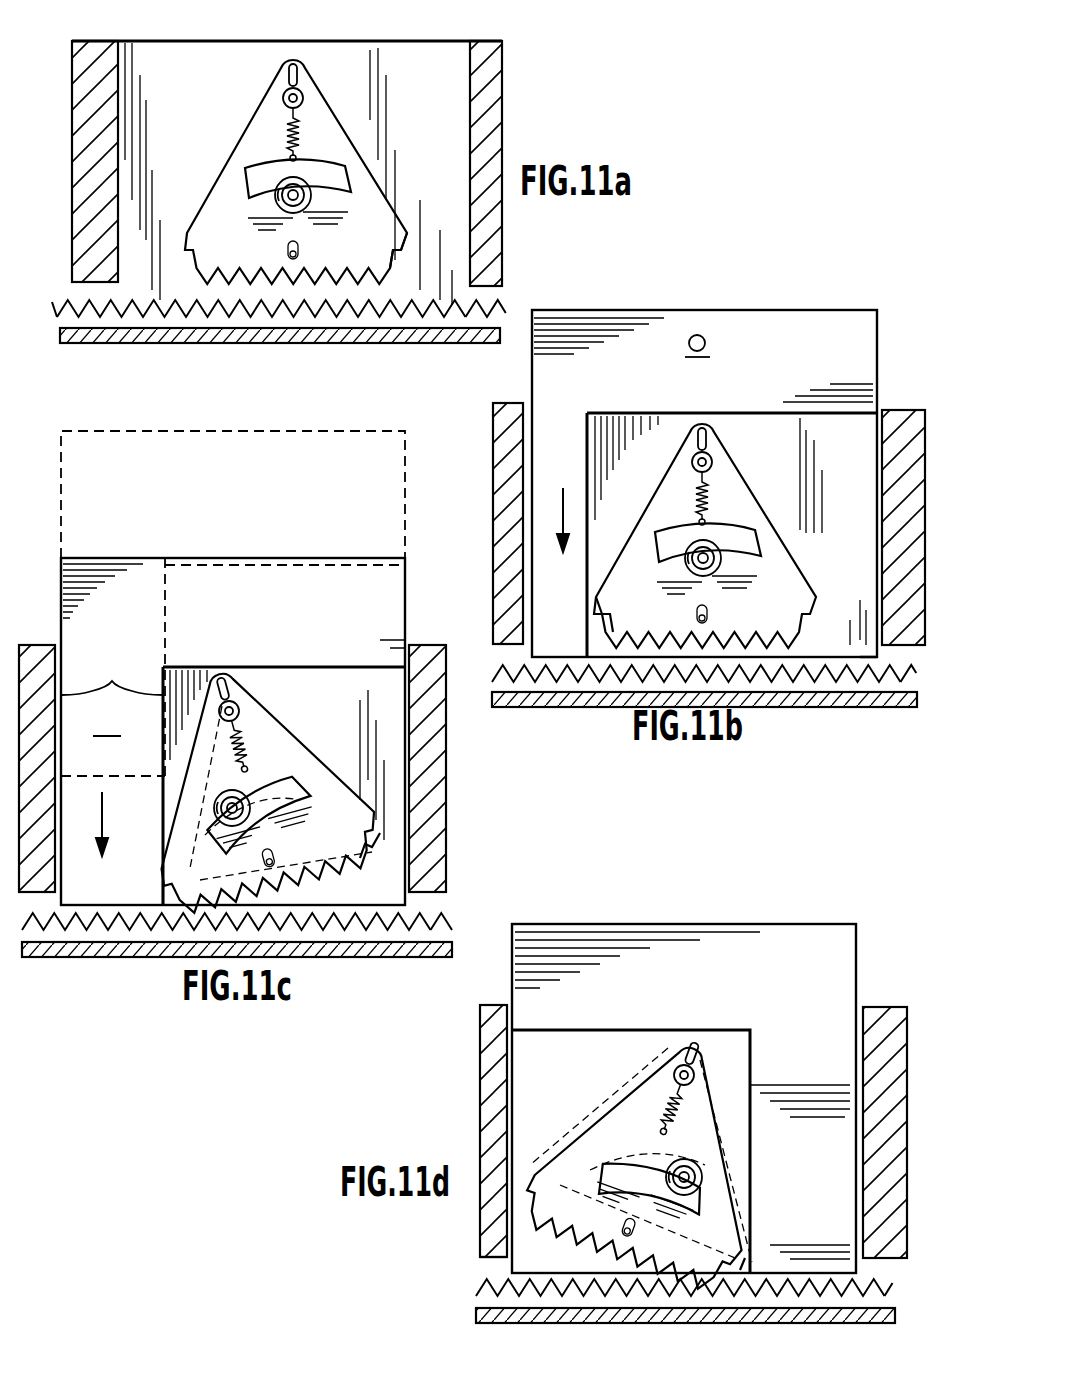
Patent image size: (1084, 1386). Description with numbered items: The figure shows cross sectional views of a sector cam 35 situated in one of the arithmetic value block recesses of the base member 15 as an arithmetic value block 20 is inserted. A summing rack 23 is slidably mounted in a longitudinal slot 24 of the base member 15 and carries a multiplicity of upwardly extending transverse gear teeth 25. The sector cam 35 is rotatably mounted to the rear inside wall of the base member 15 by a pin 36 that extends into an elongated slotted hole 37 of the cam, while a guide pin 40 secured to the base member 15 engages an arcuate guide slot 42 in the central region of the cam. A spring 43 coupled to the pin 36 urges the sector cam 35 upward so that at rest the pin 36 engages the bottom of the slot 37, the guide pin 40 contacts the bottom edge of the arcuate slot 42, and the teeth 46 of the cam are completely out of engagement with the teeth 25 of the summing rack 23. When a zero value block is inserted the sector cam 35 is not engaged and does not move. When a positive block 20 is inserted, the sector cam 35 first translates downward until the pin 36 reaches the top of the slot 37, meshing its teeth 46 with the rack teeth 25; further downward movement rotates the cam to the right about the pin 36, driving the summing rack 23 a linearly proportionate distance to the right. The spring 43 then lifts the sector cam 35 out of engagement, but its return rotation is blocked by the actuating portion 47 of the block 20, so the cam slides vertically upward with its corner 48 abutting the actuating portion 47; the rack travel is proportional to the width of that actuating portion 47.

In FIG. 11a, the base member 15 is at (76, 42).
In FIG. 11b, the base member 15 is at (504, 406).
In FIG. 11c, the base member 15 is at (42, 645).
In FIG. 11d, the base member 15 is at (494, 1008).
In FIG. 11b, the arithmetic value block 20 is at (704, 483).
In FIG. 11c, the arithmetic value block 20 is at (125, 558).
In FIG. 11d, the arithmetic value block 20 is at (684, 1098).
In FIG. 11a, the summing rack 23 is at (90, 326).
In FIG. 11b, the summing rack 23 is at (818, 690).
In FIG. 11c, the summing rack 23 is at (360, 944).
In FIG. 11d, the summing rack 23 is at (505, 1310).
In FIG. 11a, the longitudinal slot 24 is at (80, 292).
In FIG. 11b, the longitudinal slot 24 is at (885, 652).
In FIG. 11c, the longitudinal slot 24 is at (430, 895).
In FIG. 11d, the longitudinal slot 24 is at (490, 1257).
In FIG. 11a, the transverse gear teeth 25 is at (172, 303).
In FIG. 11b, the transverse gear teeth 25 is at (798, 668).
In FIG. 11c, the transverse gear teeth 25 is at (92, 912).
In FIG. 11d, the transverse gear teeth 25 is at (482, 1282).
In FIG. 11a, the sector cam 35 is at (237, 150).
In FIG. 11b, the sector cam 35 is at (722, 468).
In FIG. 11c, the sector cam 35 is at (278, 745).
In FIG. 11d, the sector cam 35 is at (640, 1108).
In FIG. 11a, the pin 36 is at (303, 96).
In FIG. 11b, the pin 36 is at (712, 460).
In FIG. 11c, the pin 36 is at (240, 705).
In FIG. 11d, the pin 36 is at (690, 1068).
In FIG. 11a, the elongated slotted hole 37 is at (297, 64).
In FIG. 11b, the elongated slotted hole 37 is at (705, 428).
In FIG. 11c, the elongated slotted hole 37 is at (236, 700).
In FIG. 11d, the elongated slotted hole 37 is at (698, 1062).
In FIG. 11a, the guide pin 40 is at (292, 196).
In FIG. 11b, the guide pin 40 is at (700, 558).
In FIG. 11c, the guide pin 40 is at (230, 808).
In FIG. 11d, the guide pin 40 is at (702, 1178).
In FIG. 11a, the arcuate guide slot 42 is at (252, 178).
In FIG. 11b, the arcuate guide slot 42 is at (740, 528).
In FIG. 11c, the arcuate guide slot 42 is at (298, 808).
In FIG. 11d, the arcuate guide slot 42 is at (608, 1172).
In FIG. 11a, the spring 43 is at (300, 128).
In FIG. 11b, the spring 43 is at (712, 500).
In FIG. 11c, the spring 43 is at (255, 735).
In FIG. 11d, the spring 43 is at (680, 1120).
In FIG. 11a, the teeth 46 is at (395, 272).
In FIG. 11b, the teeth 46 is at (608, 630).
In FIG. 11c, the teeth 46 is at (362, 868).
In FIG. 11d, the teeth 46 is at (745, 1268).
In FIG. 11c, the actuating portion 47 is at (112, 695).
In FIG. 11c, the corner 48 is at (160, 890).